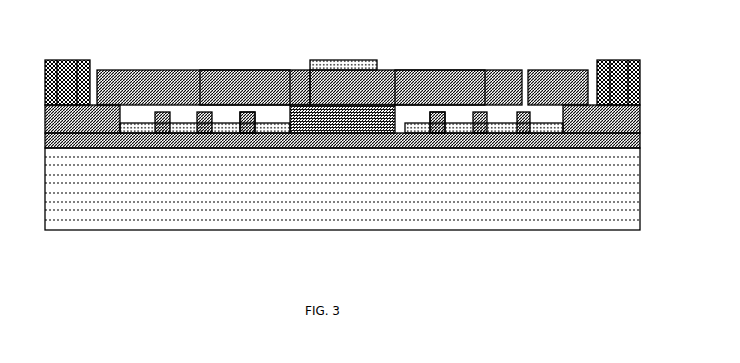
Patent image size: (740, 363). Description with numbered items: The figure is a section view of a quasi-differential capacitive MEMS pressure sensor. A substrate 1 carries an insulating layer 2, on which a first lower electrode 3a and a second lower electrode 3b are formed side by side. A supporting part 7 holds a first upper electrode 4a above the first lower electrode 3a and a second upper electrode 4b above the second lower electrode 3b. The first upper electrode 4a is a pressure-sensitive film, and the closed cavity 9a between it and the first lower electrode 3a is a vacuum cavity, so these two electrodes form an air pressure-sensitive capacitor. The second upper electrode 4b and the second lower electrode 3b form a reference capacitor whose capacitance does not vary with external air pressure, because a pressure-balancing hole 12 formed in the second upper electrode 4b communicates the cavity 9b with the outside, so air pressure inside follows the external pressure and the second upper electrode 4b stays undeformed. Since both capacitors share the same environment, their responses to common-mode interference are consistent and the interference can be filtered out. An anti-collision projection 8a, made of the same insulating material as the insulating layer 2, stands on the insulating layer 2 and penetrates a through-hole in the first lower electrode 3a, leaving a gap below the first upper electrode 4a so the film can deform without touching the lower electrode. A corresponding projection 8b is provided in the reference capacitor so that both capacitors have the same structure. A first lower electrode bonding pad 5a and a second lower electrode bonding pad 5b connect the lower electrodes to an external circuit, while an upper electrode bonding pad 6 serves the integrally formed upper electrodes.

The substrate 1 is at (308, 133).
The insulating layer 2 is at (195, 133).
The first lower electrode 3a is at (142, 133).
The second lower electrode 3b is at (476, 133).
The first upper electrode 4a is at (167, 70).
The second upper electrode 4b is at (503, 70).
The first lower electrode bonding pad 5a is at (73, 60).
The second lower electrode bonding pad 5b is at (622, 60).
The upper electrode bonding pad 6 is at (347, 60).
The supporting part 7 is at (115, 133).
The anti-collision projection 8a is at (258, 133).
The projection 8b is at (445, 133).
The closed cavity 9a is at (238, 70).
The cavity 9b is at (460, 70).
The pressure-balancing hole 12 is at (528, 70).